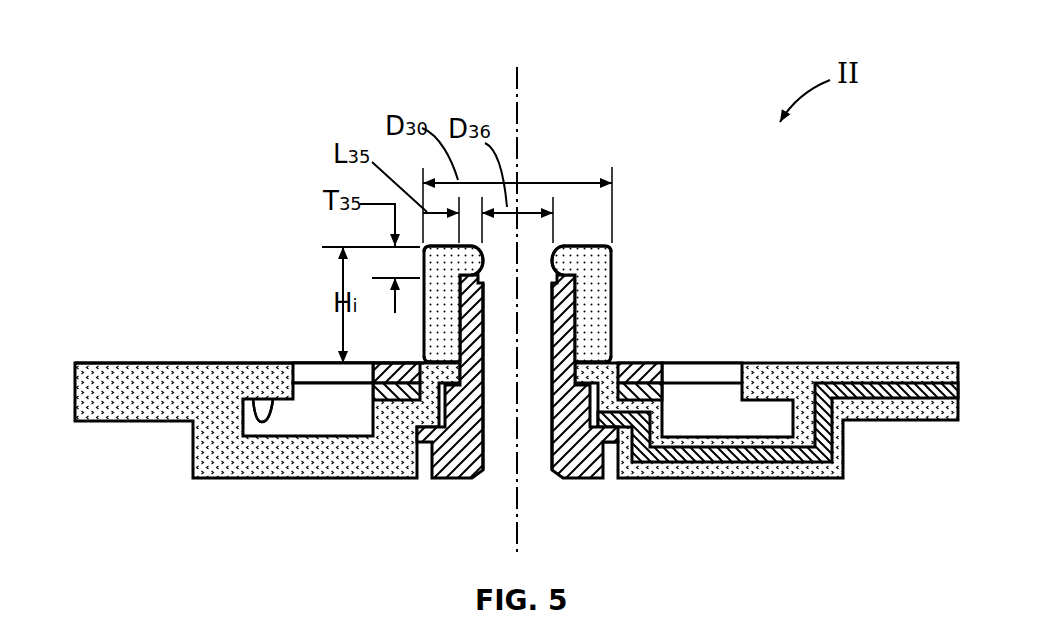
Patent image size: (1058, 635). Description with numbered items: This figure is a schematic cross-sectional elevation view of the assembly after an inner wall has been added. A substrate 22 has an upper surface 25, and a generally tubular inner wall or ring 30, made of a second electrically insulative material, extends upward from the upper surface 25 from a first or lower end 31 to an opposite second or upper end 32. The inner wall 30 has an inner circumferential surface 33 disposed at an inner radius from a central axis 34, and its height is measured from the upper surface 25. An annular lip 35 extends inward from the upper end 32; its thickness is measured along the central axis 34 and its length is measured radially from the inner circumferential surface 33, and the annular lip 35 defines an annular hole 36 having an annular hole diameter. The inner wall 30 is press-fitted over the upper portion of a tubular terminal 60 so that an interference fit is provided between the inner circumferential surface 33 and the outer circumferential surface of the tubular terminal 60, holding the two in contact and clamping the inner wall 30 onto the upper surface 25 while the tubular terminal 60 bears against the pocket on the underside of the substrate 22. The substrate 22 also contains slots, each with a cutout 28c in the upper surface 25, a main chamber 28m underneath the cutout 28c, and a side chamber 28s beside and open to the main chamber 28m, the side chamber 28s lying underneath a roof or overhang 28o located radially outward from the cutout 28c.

The substrate 22 is at (123, 379).
The upper surface 25 is at (193, 363).
The cutout 28c is at (318, 373).
The main chamber 28m is at (337, 402).
The roof or overhang 28o is at (257, 408).
The side chamber 28s is at (273, 421).
The inner wall 30 is at (597, 298).
The first or lower end 31 is at (593, 347).
The second or upper end 32 is at (597, 265).
The inner circumferential surface 33 is at (575, 307).
The central axis 34 is at (515, 77).
The annular lip 35 is at (567, 262).
The annular hole 36 is at (542, 160).
The tubular terminal 60 is at (570, 463).